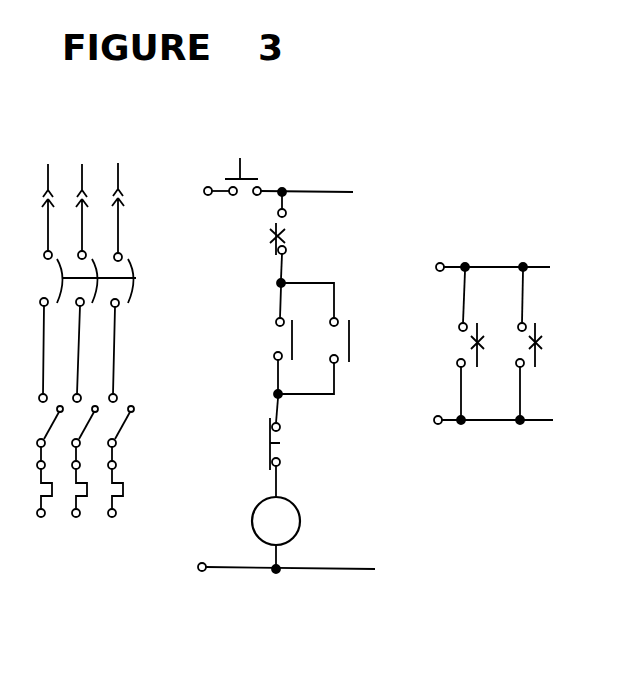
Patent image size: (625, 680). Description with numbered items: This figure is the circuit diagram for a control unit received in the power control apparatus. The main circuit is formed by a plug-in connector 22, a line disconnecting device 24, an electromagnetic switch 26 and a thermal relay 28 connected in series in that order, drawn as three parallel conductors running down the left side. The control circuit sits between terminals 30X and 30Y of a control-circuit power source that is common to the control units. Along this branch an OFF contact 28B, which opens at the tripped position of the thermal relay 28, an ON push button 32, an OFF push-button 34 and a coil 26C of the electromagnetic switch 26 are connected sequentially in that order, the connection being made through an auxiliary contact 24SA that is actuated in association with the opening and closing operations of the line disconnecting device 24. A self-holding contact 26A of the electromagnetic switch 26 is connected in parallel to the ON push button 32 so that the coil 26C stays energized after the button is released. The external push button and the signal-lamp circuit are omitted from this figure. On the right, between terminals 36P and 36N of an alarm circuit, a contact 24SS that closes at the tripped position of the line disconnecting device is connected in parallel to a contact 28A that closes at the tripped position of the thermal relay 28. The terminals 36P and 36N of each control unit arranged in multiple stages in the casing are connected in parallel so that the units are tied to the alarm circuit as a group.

The plug-in connector 22 is at (123, 192).
The line disconnecting device 24 is at (136, 268).
The electromagnetic switch 26 is at (124, 425).
The thermal relay 28 is at (124, 494).
The terminal 30X is at (205, 190).
The auxiliary contact 24SA is at (245, 143).
The OFF contact 28B is at (283, 238).
The ON push button 32 is at (293, 340).
The self-holding contact 26A is at (350, 335).
The OFF push-button 34 is at (281, 443).
The coil 26C is at (298, 511).
The terminal 30Y is at (201, 571).
The terminal 36P is at (437, 264).
The contact 24SS is at (477, 323).
The contact 28A is at (537, 327).
The terminal 36N is at (440, 424).